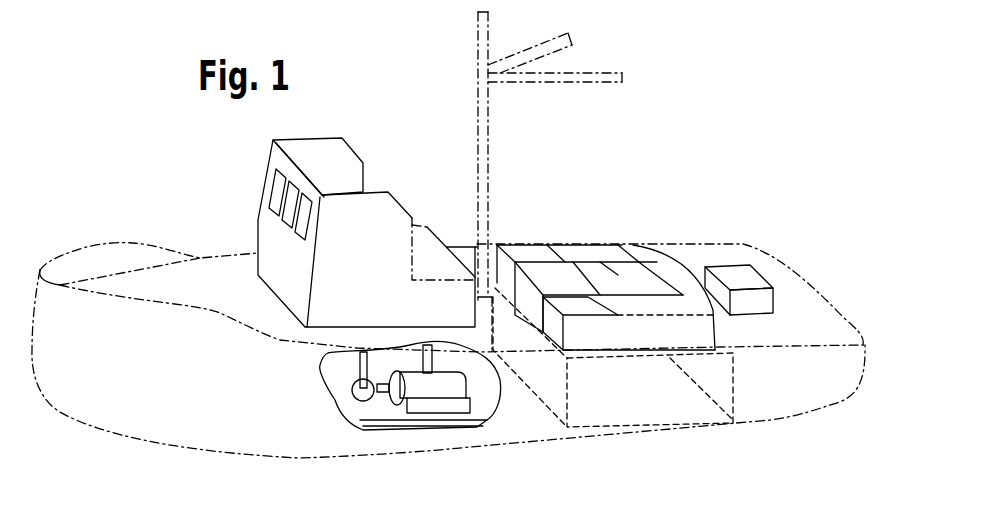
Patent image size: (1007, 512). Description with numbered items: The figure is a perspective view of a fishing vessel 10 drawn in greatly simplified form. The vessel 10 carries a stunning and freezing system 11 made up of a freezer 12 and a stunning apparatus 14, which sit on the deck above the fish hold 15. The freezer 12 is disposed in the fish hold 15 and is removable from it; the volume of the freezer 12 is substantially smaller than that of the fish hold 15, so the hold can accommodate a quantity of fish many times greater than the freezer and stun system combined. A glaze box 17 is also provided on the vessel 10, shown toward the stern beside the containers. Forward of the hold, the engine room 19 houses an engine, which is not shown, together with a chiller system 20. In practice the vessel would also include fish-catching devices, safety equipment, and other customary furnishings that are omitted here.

The vessel 10 is at (672, 75).
The stunning and freezing system 11 is at (647, 223).
The freezer 12 is at (527, 292).
The stunning apparatus 14 is at (617, 330).
The fish hold 15 is at (773, 420).
The glaze box 17 is at (737, 277).
The engine room 19 is at (380, 410).
The chiller system 20 is at (427, 387).